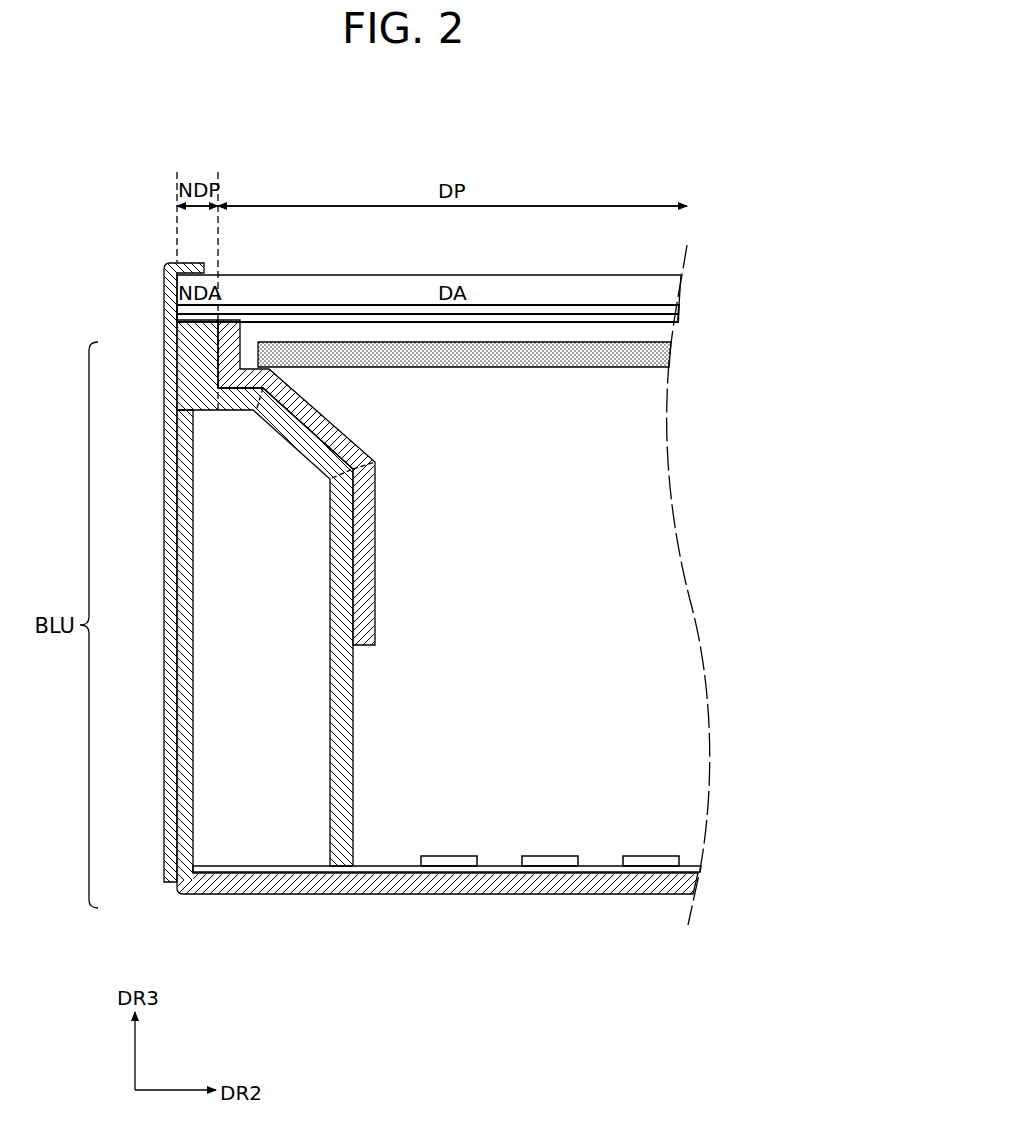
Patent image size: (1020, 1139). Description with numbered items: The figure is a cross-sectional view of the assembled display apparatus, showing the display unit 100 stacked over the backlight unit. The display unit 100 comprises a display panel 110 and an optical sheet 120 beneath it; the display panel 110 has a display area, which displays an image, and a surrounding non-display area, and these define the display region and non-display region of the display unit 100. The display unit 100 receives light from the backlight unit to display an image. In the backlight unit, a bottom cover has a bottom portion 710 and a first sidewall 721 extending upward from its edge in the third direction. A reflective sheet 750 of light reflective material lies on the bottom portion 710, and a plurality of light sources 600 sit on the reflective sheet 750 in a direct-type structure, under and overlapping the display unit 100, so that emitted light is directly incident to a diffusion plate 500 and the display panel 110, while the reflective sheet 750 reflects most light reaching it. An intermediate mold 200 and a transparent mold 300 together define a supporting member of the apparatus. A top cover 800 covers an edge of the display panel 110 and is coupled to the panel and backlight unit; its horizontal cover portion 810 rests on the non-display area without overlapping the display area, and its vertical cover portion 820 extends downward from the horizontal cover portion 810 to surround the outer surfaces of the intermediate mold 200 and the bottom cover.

The display unit 100 is at (506, 301).
The display panel 110 is at (683, 288).
The optical sheet 120 is at (681, 312).
The intermediate mold 200 is at (190, 398).
The transparent mold 300 is at (226, 373).
The diffusion plate 500 is at (265, 350).
The light source 600 is at (433, 857).
The bottom portion 710 is at (397, 663).
The first sidewall 721 is at (184, 843).
The reflective sheet 750 is at (198, 870).
The top cover 800 is at (119, 563).
The horizontal cover portion 810 is at (196, 264).
The vertical cover portion 820 is at (176, 297).